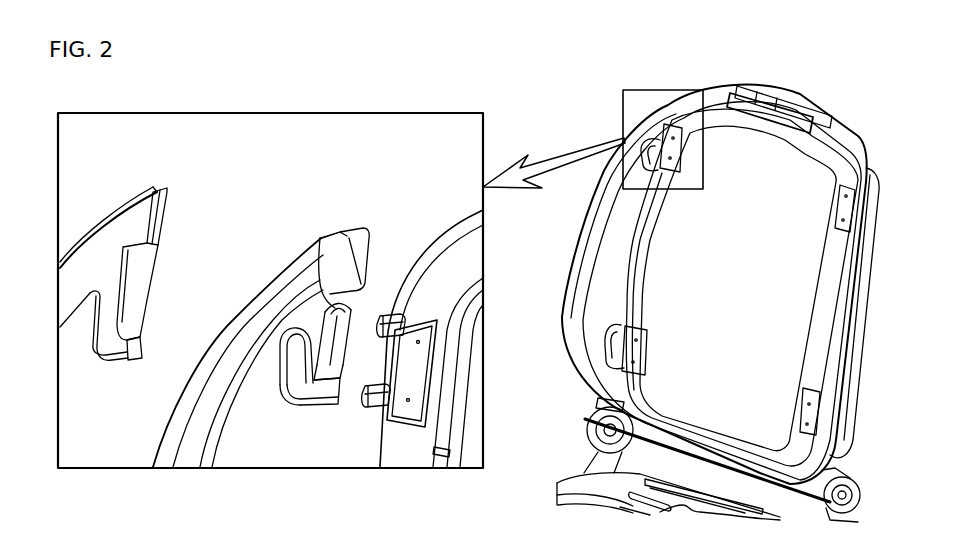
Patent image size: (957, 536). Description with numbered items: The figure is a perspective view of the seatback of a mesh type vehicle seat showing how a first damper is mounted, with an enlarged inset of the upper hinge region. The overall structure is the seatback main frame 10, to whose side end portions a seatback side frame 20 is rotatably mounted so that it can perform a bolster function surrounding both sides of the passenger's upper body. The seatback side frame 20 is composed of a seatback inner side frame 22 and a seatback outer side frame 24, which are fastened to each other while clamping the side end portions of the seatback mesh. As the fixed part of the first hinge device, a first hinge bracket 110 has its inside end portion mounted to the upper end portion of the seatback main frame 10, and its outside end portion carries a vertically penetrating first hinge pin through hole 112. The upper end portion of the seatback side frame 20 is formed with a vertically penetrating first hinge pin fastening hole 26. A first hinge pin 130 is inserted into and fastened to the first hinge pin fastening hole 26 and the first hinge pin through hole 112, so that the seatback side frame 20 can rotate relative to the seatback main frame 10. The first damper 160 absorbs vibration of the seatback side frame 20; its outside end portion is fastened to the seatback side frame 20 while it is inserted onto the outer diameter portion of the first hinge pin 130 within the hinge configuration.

The seatback main frame 10 is at (393, 453).
The seatback side frame 20 is at (108, 306).
The seatback inner side frame 22 is at (183, 412).
The seatback outer side frame 24 is at (110, 345).
The first hinge pin fastening hole 26 is at (352, 232).
The first hinge bracket 110 is at (417, 363).
The first hinge pin through hole 112 is at (393, 314).
The first hinge pin 130 is at (350, 292).
The first damper 160 is at (333, 317).